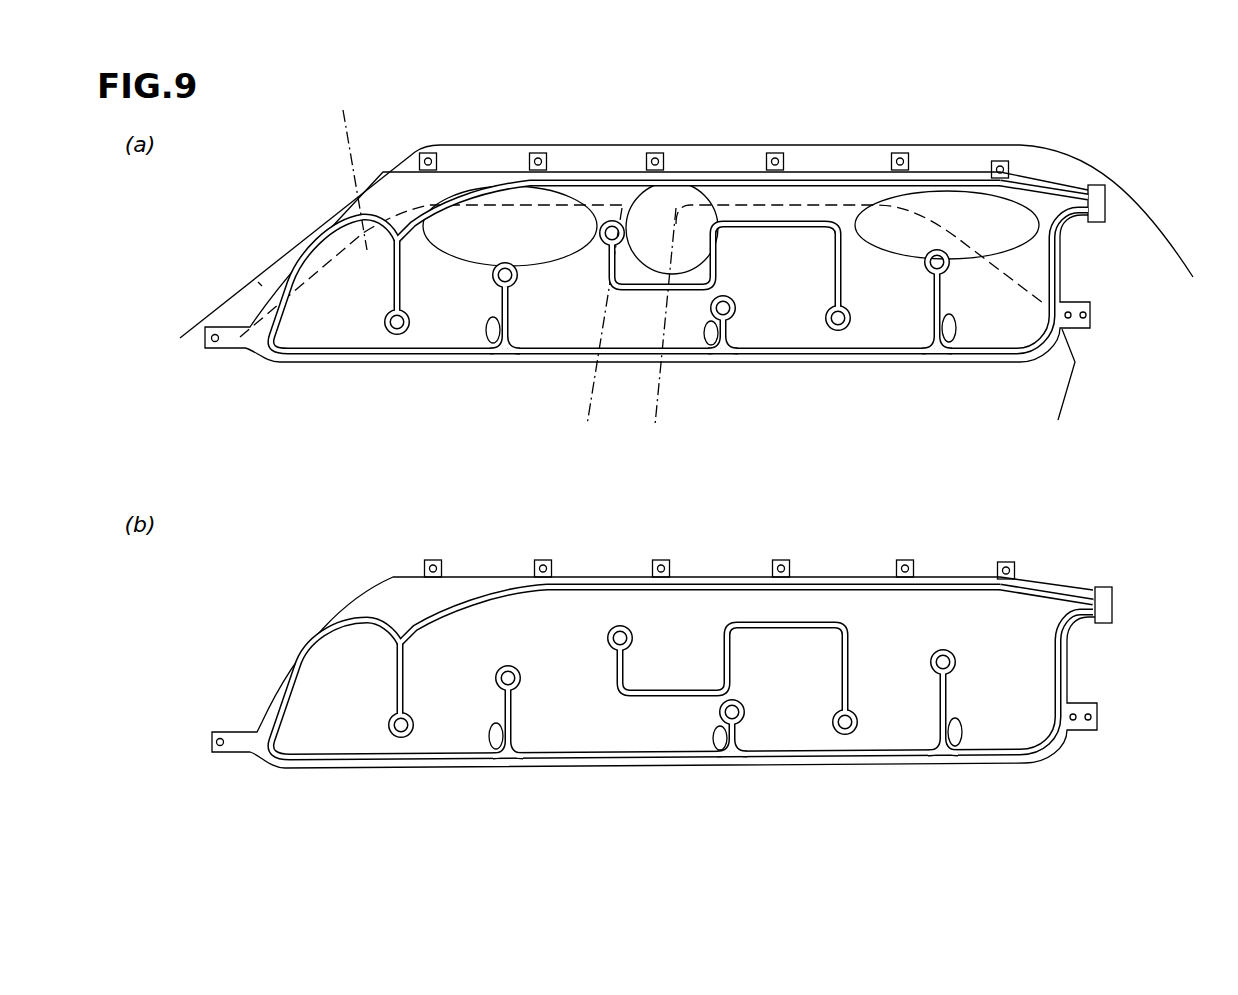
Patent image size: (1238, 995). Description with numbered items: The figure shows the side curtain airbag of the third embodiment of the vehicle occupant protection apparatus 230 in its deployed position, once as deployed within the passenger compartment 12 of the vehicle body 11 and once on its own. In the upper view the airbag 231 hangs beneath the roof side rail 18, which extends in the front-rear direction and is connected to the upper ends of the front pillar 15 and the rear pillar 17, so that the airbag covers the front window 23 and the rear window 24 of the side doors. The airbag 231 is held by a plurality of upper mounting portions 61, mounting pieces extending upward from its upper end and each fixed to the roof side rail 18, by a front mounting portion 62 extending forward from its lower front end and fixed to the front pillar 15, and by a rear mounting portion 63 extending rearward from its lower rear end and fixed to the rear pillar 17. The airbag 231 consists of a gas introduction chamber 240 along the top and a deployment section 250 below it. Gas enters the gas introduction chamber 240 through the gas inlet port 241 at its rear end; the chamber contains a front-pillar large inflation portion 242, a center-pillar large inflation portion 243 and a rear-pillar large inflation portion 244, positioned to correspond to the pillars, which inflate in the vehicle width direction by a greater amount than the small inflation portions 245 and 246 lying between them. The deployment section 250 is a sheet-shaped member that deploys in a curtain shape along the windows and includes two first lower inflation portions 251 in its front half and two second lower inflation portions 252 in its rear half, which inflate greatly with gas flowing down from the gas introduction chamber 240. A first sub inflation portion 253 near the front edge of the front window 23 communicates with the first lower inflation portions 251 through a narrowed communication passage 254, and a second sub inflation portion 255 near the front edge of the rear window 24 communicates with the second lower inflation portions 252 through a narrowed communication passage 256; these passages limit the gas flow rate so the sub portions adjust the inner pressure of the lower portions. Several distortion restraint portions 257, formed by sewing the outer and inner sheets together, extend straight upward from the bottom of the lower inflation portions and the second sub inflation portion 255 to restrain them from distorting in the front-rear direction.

The vehicle body 11 is at (222, 297).
The passenger compartment 12 is at (211, 478).
The front pillar 15 is at (258, 282).
The rear pillar 17 is at (1135, 225).
The roof side rail 18 is at (458, 143).
The front window 23 is at (348, 168).
The rear window 24 is at (737, 205).
The upper mounting portions 61 is at (995, 158).
The front mounting portion 62 is at (218, 348).
The rear mounting portion 63 is at (1085, 329).
The vehicle occupant protection apparatus 230 is at (280, 185).
The airbag 231 is at (746, 418).
The gas introduction chamber 240 is at (1066, 211).
The gas inlet port 241 is at (1095, 185).
The front-pillar large inflation portion 242 is at (587, 192).
The center-pillar large inflation portion 243 is at (703, 190).
The rear-pillar large inflation portion 244 is at (1042, 190).
The small inflation portion 245 is at (619, 193).
The small inflation portion 246 is at (790, 195).
The deployment section 250 is at (1064, 262).
The first lower inflation portions 251 is at (453, 312).
The second lower inflation portions 252 is at (907, 303).
The first sub inflation portion 253 is at (330, 318).
The communication passage 254 is at (388, 336).
The second sub inflation portion 255 is at (770, 310).
The communication passage 256 is at (830, 338).
The distortion restraint portions 257 is at (490, 323).